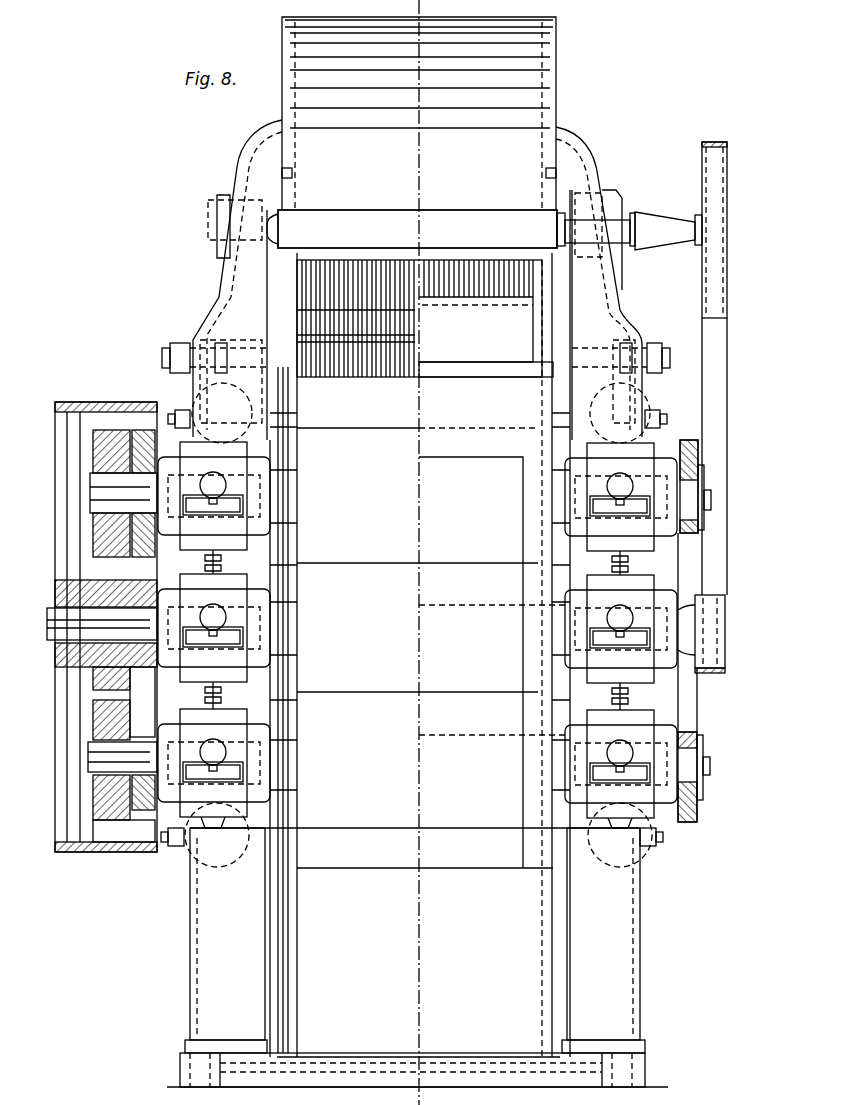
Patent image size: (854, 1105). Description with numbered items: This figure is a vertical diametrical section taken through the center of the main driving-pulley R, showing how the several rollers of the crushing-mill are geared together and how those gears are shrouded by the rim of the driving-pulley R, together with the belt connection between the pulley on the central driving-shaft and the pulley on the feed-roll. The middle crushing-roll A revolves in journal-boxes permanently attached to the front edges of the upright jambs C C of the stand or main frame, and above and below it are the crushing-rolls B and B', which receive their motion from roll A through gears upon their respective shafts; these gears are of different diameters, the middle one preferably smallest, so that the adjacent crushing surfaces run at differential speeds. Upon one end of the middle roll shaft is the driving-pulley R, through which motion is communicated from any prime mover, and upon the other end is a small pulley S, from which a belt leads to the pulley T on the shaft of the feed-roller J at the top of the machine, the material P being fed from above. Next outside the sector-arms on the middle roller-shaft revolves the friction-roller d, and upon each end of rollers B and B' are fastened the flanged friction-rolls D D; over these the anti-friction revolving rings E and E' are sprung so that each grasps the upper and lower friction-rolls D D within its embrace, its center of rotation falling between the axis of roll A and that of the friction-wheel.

The hopper P is at (419, 113).
The feed-roller J is at (455, 240).
The pulley on the feed-roll shaft T is at (722, 368).
The driving-pulley R is at (88, 406).
The anti-friction revolving ring E is at (212, 631).
The bearing box E' is at (641, 631).
The friction-roller d is at (215, 479).
The upper crushing-roll B is at (417, 648).
The middle crushing-roll A is at (432, 648).
The lower crushing-roll B' is at (432, 801).
The upright jamb C is at (417, 957).
The friction-roll D is at (705, 530).
The small pulley S is at (710, 634).